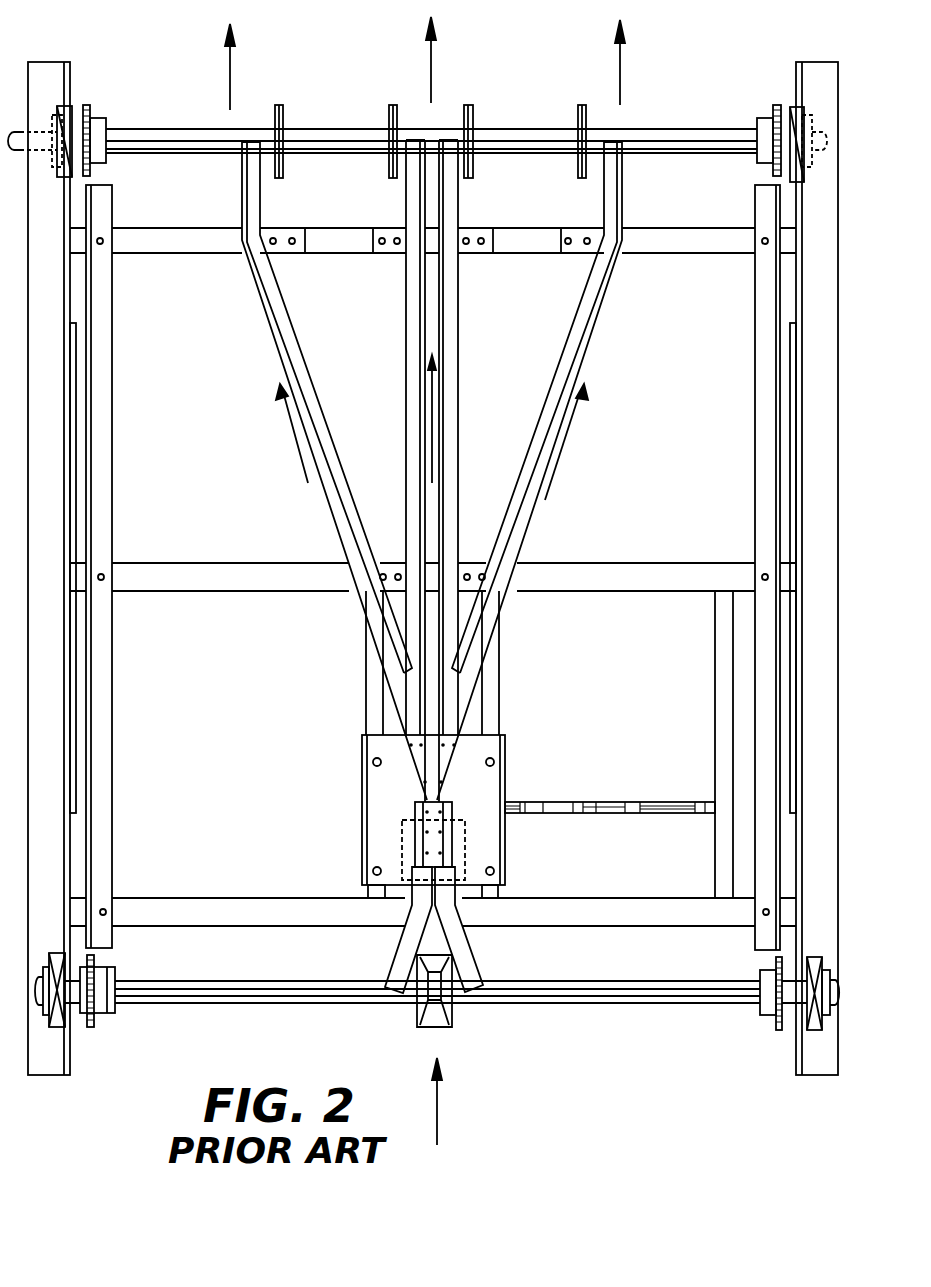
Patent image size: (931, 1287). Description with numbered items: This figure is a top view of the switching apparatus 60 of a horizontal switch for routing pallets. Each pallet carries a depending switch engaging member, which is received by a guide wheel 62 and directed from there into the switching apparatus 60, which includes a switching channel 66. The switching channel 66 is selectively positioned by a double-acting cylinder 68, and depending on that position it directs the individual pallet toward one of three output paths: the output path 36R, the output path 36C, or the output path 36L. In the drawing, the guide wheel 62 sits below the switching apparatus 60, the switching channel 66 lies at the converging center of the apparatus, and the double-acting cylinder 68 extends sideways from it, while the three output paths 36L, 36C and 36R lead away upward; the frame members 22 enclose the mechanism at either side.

The frame post 22 is at (48, 62).
The output path 36L is at (232, 78).
The output path 36C is at (433, 70).
The output path 36R is at (622, 78).
The switching apparatus 60 is at (350, 786).
The guide wheel 62 is at (453, 1018).
The switching channel 66 is at (445, 843).
The double-acting cylinder 68 is at (590, 813).